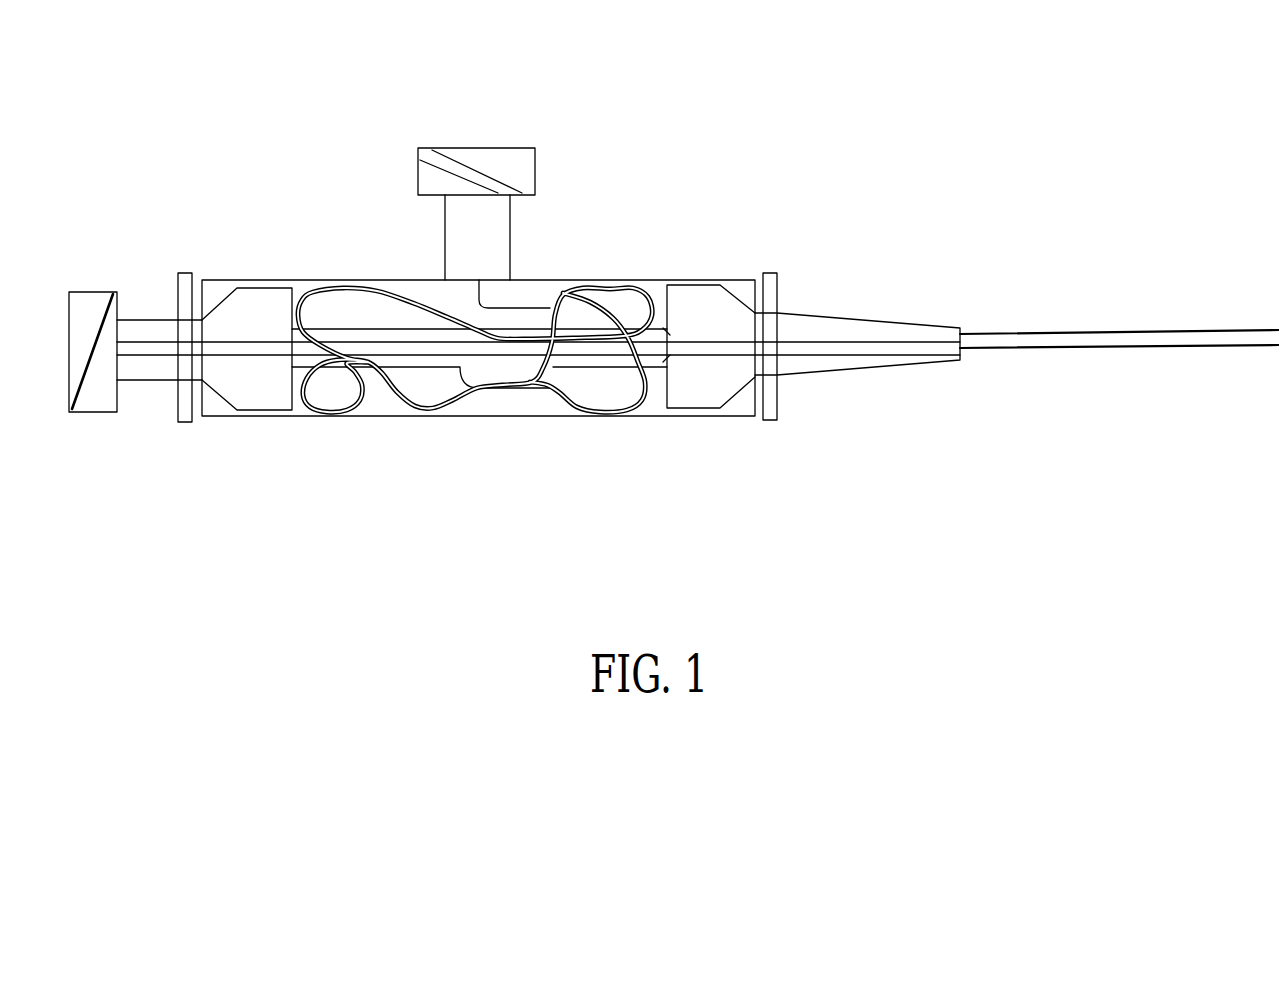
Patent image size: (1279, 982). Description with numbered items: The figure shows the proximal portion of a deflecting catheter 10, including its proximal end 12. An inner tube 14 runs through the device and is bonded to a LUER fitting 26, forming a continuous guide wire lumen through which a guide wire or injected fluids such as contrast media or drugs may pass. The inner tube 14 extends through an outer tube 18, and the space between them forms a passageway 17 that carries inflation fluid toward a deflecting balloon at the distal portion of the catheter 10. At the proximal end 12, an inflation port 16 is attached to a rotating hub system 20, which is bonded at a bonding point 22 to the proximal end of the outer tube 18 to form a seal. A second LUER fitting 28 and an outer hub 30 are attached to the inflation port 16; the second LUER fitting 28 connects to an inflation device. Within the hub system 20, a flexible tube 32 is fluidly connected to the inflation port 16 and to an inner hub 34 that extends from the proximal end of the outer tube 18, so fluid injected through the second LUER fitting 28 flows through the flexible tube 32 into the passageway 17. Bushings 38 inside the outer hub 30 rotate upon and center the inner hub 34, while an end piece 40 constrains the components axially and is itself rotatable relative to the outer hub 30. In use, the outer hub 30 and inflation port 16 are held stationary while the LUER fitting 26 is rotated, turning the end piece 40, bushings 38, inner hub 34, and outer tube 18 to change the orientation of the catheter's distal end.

The deflecting catheter 10 is at (850, 70).
The proximal end 12 is at (214, 216).
The inner tube 14 is at (1178, 333).
The inflation port 16 is at (510, 237).
The passageway 17 is at (1023, 350).
The outer tube 18 is at (1087, 333).
The rotating hub system 20 is at (452, 428).
The bonding point 22 is at (297, 370).
The LUER fitting 26 is at (93, 292).
The second LUER fitting 28 is at (537, 170).
The outer hub 30 is at (650, 280).
The flexible tube 32 is at (348, 282).
The inner hub 34 is at (555, 368).
The bushings 38 is at (273, 415).
The end piece 40 is at (185, 423).